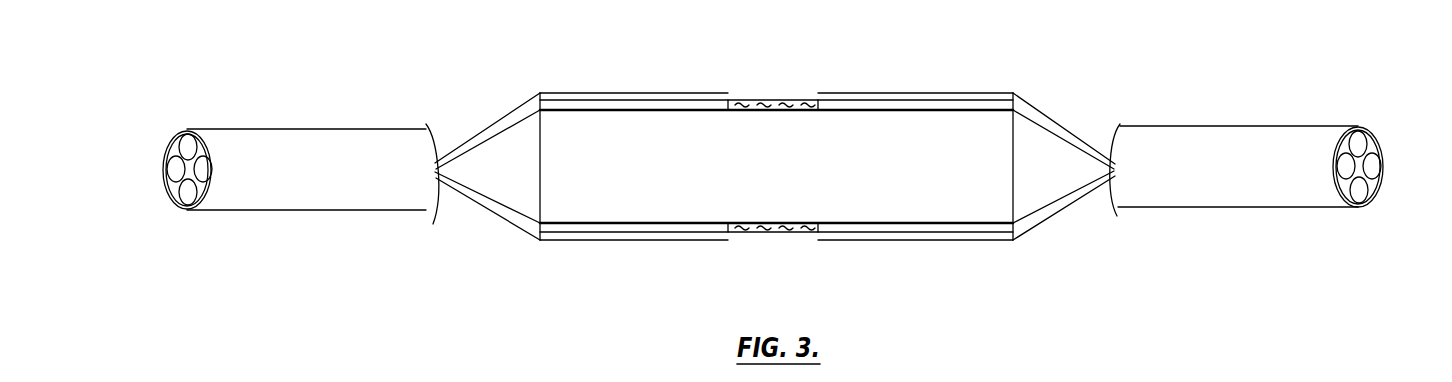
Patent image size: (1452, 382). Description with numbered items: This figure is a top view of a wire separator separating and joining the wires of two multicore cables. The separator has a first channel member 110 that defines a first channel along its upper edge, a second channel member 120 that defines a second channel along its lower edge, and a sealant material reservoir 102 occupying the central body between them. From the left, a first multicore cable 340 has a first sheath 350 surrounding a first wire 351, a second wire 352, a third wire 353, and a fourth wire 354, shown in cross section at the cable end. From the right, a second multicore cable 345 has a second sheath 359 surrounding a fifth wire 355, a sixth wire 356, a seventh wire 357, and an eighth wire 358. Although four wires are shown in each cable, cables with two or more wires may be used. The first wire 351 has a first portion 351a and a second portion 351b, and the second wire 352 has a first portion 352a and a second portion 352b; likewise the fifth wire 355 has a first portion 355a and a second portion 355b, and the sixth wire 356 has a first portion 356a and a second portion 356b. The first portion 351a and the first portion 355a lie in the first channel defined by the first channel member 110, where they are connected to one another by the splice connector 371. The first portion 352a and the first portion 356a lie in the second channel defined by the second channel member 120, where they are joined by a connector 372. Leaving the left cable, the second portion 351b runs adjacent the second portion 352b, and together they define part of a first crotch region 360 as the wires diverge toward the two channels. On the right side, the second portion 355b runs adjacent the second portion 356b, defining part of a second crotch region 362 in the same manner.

The sealant material reservoir 102 is at (1003, 135).
The first channel member 110 is at (733, 70).
The second channel member 120 is at (730, 265).
The first multicore cable 340 is at (303, 108).
The second multicore cable 345 is at (1170, 105).
The first sheath 350 is at (171, 144).
The first wire 351 is at (188, 144).
The second wire 352 is at (208, 170).
The third wire 353 is at (172, 168).
The fourth wire 354 is at (188, 195).
The first portion of the first wire 351a is at (638, 105).
The second portion of the first wire 351b is at (518, 112).
The first portion of the second wire 352a is at (628, 231).
The second portion of the second wire 352b is at (518, 223).
The fifth wire 355 is at (1358, 138).
The sixth wire 356 is at (1343, 166).
The seventh wire 357 is at (1373, 166).
The eighth wire 358 is at (1360, 192).
The second sheath 359 is at (1213, 125).
The first portion of the fifth wire 355a is at (937, 105).
The second portion of the fifth wire 355b is at (1043, 112).
The first portion of the sixth wire 356a is at (963, 227).
The second portion of the sixth wire 356b is at (1038, 220).
The first crotch region 360 is at (487, 172).
The second crotch region 362 is at (1062, 167).
The splice connector 371 is at (797, 102).
The connector 372 is at (817, 233).